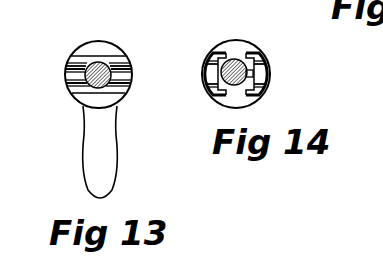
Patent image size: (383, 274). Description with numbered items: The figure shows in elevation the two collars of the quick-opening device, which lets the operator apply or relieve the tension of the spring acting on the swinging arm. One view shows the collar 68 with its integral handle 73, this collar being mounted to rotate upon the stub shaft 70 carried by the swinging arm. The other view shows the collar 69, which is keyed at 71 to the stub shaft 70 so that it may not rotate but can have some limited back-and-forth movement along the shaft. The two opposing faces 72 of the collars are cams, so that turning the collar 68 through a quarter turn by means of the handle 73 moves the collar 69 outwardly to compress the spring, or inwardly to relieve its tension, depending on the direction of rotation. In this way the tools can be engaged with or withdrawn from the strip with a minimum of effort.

In FIG. 13, the collar 68 is at (83, 97).
In FIG. 14, the collar 69 is at (236, 47).
In FIG. 13, the stub shaft 70 is at (92, 64).
In FIG. 14, the stub shaft 70 is at (234, 84).
In FIG. 14, the key 71 is at (255, 70).
In FIG. 13, the opposing cam faces 72 is at (110, 67).
In FIG. 14, the opposing cam faces 72 is at (173, 47).
In FIG. 13, the handle 73 is at (100, 152).